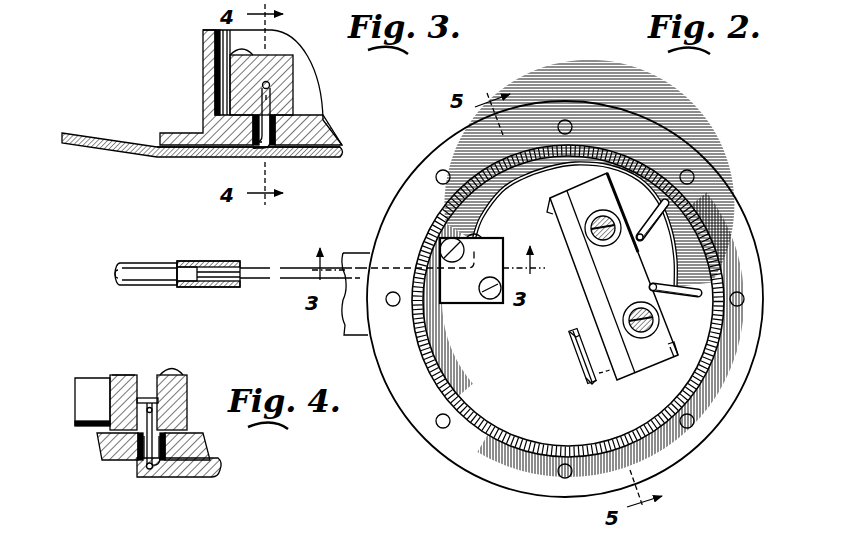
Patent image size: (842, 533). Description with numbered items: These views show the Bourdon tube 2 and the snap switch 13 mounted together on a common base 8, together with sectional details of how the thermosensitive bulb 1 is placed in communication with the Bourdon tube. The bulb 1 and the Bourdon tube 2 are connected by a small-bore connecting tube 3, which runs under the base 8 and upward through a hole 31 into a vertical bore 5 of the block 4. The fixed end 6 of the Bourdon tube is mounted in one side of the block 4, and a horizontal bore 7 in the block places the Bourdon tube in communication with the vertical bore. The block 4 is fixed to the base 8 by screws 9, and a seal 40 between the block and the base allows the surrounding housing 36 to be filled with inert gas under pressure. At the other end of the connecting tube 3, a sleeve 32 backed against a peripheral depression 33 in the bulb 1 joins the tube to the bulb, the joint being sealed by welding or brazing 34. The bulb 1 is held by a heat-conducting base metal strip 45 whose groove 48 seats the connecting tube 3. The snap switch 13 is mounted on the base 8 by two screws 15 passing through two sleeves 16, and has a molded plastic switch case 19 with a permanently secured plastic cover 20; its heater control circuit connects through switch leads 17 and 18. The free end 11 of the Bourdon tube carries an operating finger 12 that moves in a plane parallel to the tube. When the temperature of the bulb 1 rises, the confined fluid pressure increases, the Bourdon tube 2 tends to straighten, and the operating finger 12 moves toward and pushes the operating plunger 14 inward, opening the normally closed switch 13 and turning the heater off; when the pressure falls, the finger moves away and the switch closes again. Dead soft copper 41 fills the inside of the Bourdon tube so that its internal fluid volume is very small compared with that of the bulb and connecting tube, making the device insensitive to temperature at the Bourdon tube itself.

In FIG. 2, the thermosensitive bulb 1 is at (153, 263).
In FIG. 2, the Bourdon tube 2 is at (676, 252).
In FIG. 4, the Bourdon tube 2 is at (85, 378).
In FIG. 3, the small-bore connecting tube 3 is at (63, 133).
In FIG. 2, the small-bore connecting tube 3 is at (287, 264).
In FIG. 4, the small-bore connecting tube 3 is at (149, 470).
In FIG. 3, the block 4 is at (294, 70).
In FIG. 2, the block 4 is at (503, 239).
In FIG. 4, the block 4 is at (187, 378).
In FIG. 3, the vertical bore 5 is at (268, 98).
In FIG. 4, the vertical bore 5 is at (157, 420).
In FIG. 2, the fixed end of Bourdon tube 6 is at (484, 239).
In FIG. 4, the fixed end of Bourdon tube 6 is at (125, 375).
In FIG. 3, the horizontal bore 7 is at (267, 86).
In FIG. 2, the horizontal bore 7 is at (478, 264).
In FIG. 4, the horizontal bore 7 is at (150, 398).
In FIG. 3, the base 8 is at (328, 133).
In FIG. 2, the base 8 is at (481, 383).
In FIG. 4, the base 8 is at (205, 442).
In FIG. 3, the screws 9 is at (248, 54).
In FIG. 2, the screws 9 is at (440, 246).
In FIG. 4, the screws 9 is at (178, 368).
In FIG. 2, the free end of Bourdon tube 11 is at (591, 386).
In FIG. 2, the operating finger 12 is at (583, 356).
In FIG. 2, the snap switch 13 is at (584, 284).
In FIG. 2, the operating plunger 14 is at (572, 331).
In FIG. 2, the screws 15 is at (604, 212).
In FIG. 2, the sleeves 16 is at (610, 244).
In FIG. 2, the switch lead 17 is at (681, 298).
In FIG. 2, the switch lead 18 is at (667, 207).
In FIG. 2, the switch case 19 is at (665, 363).
In FIG. 2, the plastic cover 20 is at (547, 207).
In FIG. 3, the hole 31 is at (270, 150).
In FIG. 4, the hole 31 is at (163, 462).
In FIG. 2, the sleeve 32 is at (231, 261).
In FIG. 2, the peripheral depression 33 is at (193, 265).
In FIG. 2, the welding or brazing 34 is at (239, 287).
In FIG. 3, the housing 36 is at (203, 58).
In FIG. 3, the seal 40 is at (300, 117).
In FIG. 4, the seal 40 is at (140, 437).
In FIG. 4, the dead soft copper 41 is at (117, 408).
In FIG. 3, the base metal strip 45 is at (162, 158).
In FIG. 4, the base metal strip 45 is at (218, 474).
In FIG. 4, the groove 48 is at (140, 456).